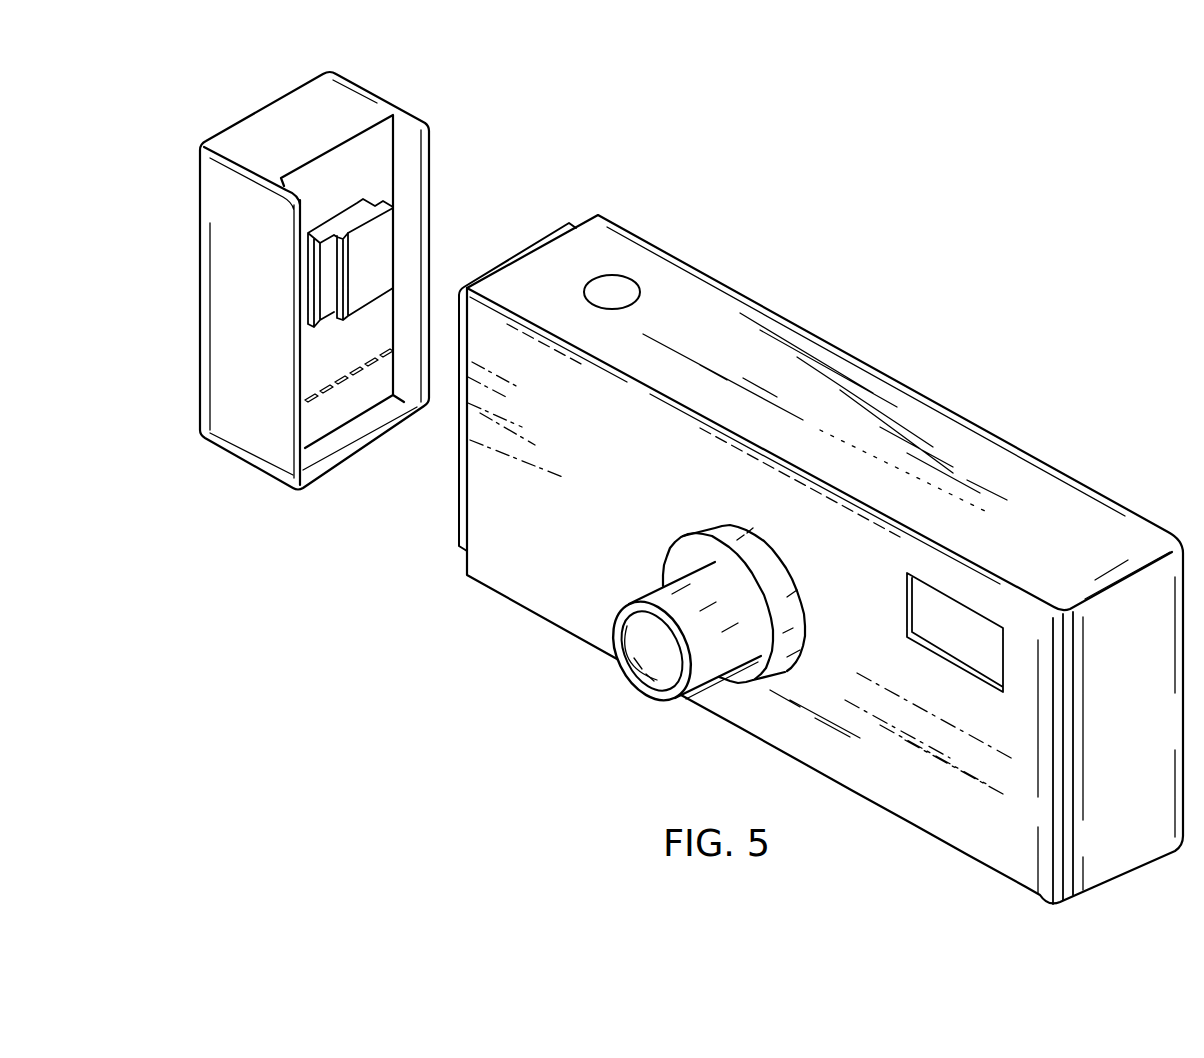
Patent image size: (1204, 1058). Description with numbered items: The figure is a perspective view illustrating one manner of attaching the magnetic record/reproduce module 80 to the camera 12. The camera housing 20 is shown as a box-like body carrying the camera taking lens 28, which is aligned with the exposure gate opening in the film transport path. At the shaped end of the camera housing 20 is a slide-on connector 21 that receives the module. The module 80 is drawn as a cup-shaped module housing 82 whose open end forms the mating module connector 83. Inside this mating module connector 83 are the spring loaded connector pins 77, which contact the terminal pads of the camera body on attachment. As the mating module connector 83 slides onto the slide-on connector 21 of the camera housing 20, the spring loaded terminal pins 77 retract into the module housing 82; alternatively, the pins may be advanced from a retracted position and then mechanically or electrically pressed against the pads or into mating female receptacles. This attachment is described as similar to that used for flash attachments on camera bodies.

The camera 12 is at (902, 296).
The camera housing 20 is at (882, 393).
The slide-on connector 21 is at (541, 234).
The camera taking lens 28 is at (653, 653).
The magnetic record/reproduce module 80 is at (443, 93).
The module housing 82 is at (345, 101).
The mating module connector 83 is at (384, 260).
The spring loaded connector pins 77 is at (337, 380).